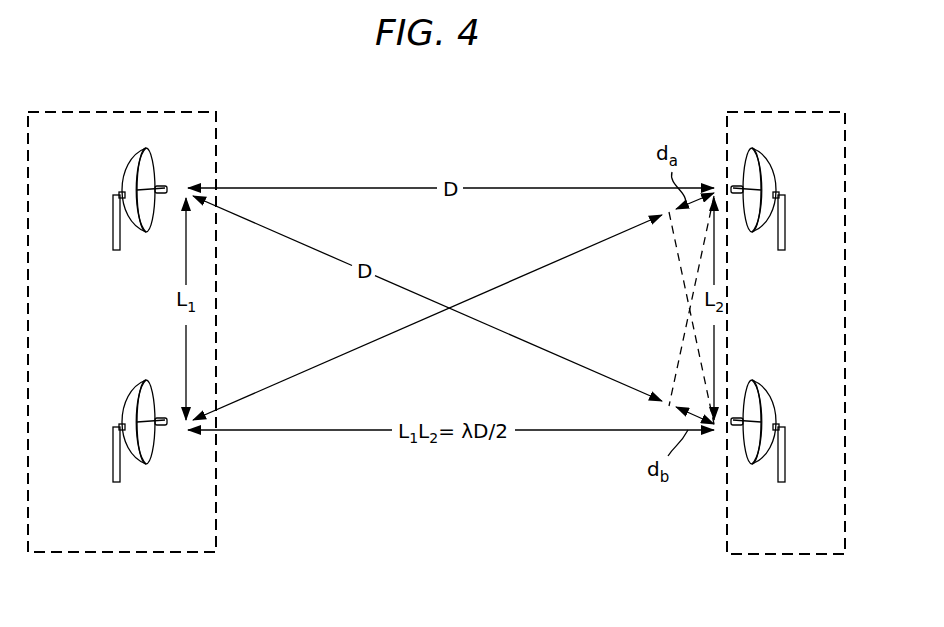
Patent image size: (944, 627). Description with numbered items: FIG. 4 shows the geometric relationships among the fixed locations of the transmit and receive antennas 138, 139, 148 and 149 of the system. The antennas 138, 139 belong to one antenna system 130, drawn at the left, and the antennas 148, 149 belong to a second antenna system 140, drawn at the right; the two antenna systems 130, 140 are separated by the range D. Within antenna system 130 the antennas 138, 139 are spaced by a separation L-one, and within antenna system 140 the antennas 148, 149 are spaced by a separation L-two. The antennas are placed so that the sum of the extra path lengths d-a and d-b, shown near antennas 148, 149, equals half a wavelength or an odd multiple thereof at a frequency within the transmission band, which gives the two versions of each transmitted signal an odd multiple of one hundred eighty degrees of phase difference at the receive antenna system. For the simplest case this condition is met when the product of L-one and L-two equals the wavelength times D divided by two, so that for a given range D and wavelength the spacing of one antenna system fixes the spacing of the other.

The antenna system 130 is at (119, 112).
The antenna system 140 is at (791, 112).
The antenna 138 is at (126, 171).
The antenna 139 is at (124, 405).
The antenna 148 is at (773, 175).
The antenna 149 is at (776, 404).